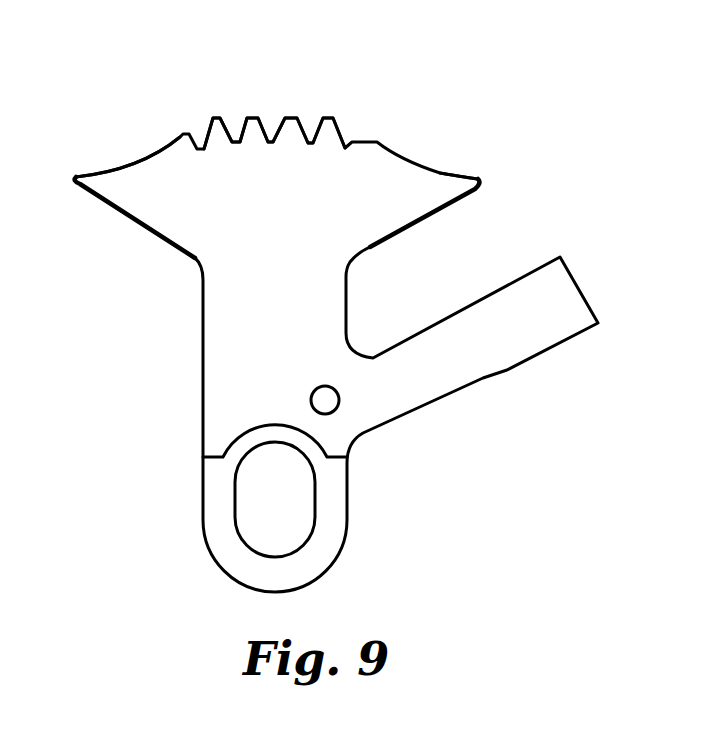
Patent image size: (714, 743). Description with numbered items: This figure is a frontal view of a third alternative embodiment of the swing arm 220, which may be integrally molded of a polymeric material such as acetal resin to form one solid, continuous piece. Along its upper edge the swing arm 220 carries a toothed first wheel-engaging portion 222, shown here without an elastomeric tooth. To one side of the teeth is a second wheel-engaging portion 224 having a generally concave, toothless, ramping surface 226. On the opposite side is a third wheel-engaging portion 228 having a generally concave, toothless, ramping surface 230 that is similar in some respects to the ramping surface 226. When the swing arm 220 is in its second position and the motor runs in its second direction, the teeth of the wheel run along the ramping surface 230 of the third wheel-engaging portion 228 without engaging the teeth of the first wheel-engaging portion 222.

The swing arm 220 is at (320, 297).
The first wheel-engaging portion 222 is at (292, 117).
The second wheel-engaging portion 224 is at (430, 192).
The ramping surface 226 is at (425, 168).
The third wheel-engaging portion 228 is at (160, 212).
The ramping surface 230 is at (133, 162).